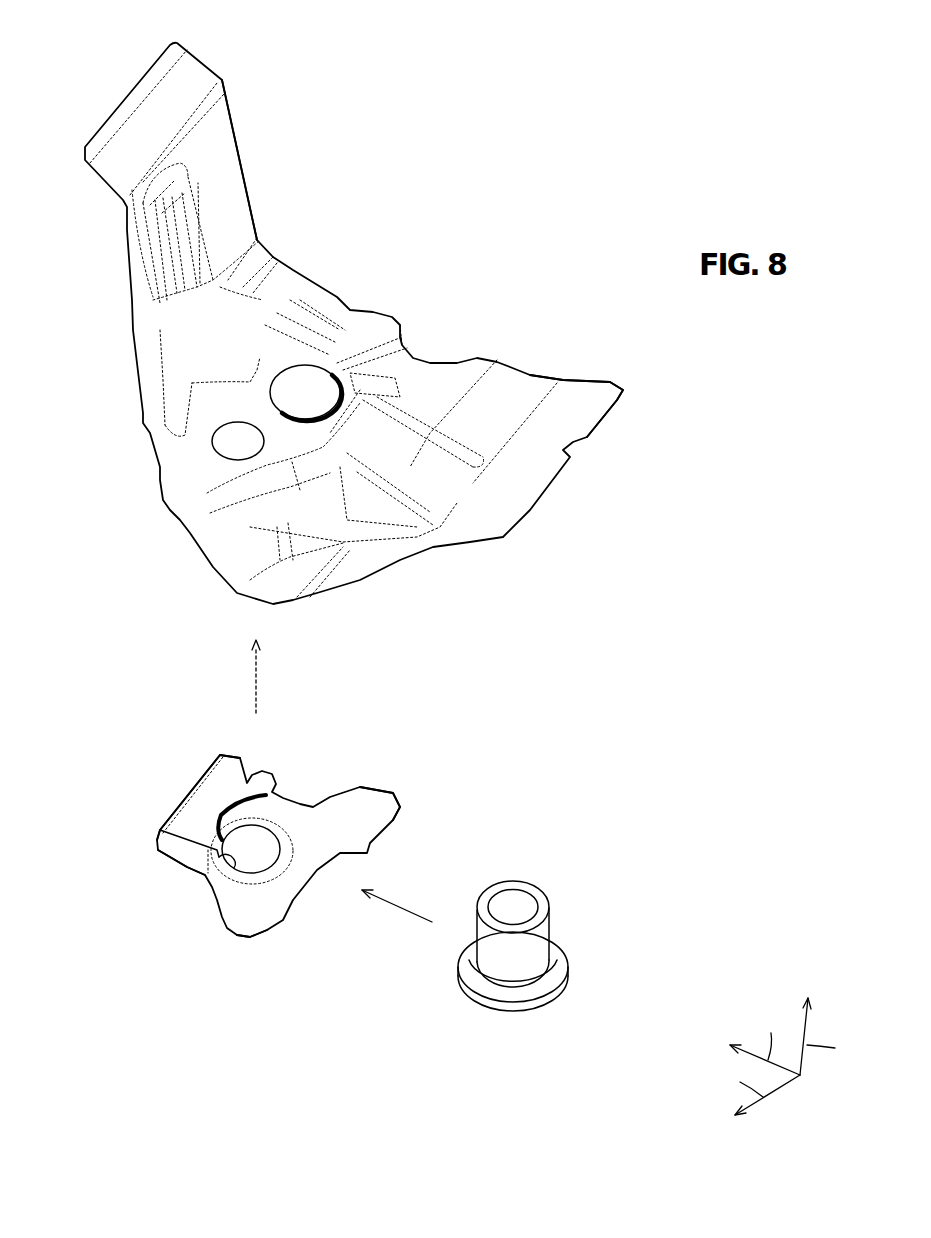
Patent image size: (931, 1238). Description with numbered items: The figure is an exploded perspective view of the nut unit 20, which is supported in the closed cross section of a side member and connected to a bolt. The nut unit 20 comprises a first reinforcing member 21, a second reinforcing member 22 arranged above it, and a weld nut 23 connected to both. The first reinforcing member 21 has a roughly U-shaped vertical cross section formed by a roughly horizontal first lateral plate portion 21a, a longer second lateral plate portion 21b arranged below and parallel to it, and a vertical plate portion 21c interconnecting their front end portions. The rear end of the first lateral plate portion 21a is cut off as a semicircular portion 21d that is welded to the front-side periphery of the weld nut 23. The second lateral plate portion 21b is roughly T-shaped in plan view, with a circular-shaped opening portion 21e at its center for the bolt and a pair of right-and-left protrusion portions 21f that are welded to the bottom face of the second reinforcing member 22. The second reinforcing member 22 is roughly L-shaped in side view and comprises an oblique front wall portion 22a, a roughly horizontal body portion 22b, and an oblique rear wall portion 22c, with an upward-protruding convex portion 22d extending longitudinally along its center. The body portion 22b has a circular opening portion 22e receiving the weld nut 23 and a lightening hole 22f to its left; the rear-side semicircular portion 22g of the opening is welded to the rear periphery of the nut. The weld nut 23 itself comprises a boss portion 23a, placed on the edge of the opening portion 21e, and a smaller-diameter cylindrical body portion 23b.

The nut unit 20 is at (490, 168).
The second reinforcing member 22 is at (300, 233).
The front wall portion 22a is at (233, 140).
The body portion 22b is at (333, 318).
The rear wall portion 22c is at (570, 388).
The convex portion 22d is at (180, 307).
The circular opening portion 22e is at (333, 380).
The lightening hole 22f is at (232, 458).
The rear-side semicircular portion 22g is at (343, 388).
The first reinforcing member 21 is at (185, 787).
The first lateral plate portion 21a is at (232, 758).
The second lateral plate portion 21b is at (190, 868).
The vertical plate portion 21c is at (160, 830).
The semicircular portion 21d is at (250, 785).
The circular-shaped opening portion 21e is at (223, 857).
The protrusion portions 21f is at (242, 930).
The weld nut 23 is at (662, 892).
The boss portion 23a is at (568, 970).
The cylindrical body portion 23b is at (550, 923).